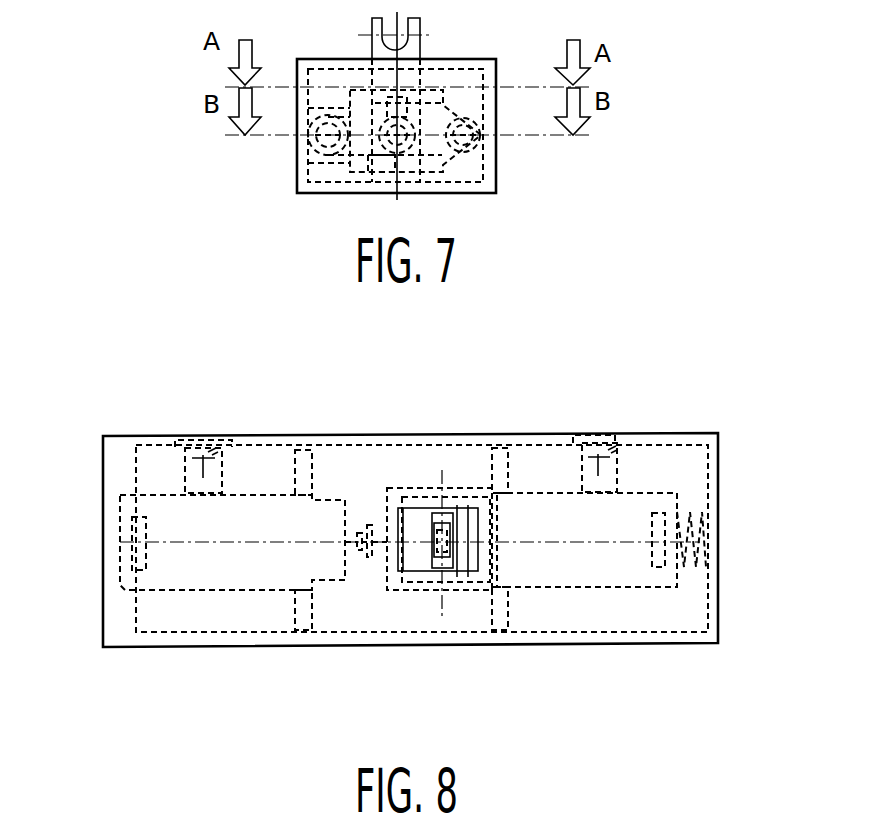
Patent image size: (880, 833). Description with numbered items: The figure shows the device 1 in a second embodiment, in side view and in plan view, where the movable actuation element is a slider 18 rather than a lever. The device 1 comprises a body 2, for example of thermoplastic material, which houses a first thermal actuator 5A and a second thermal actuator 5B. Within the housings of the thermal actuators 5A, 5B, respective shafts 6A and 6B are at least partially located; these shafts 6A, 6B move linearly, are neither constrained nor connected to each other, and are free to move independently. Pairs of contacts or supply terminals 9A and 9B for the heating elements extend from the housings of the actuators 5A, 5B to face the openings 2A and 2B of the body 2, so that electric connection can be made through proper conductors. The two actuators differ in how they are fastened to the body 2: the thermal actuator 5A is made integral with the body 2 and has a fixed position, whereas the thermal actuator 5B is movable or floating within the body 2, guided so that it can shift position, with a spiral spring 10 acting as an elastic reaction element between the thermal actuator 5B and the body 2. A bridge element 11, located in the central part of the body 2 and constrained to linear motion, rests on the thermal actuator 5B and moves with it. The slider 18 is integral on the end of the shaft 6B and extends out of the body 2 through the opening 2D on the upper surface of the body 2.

In FIG. 7, the device 1 is at (507, 44).
In FIG. 8, the device 1 is at (199, 661).
In FIG. 7, the body 2 is at (305, 63).
In FIG. 8, the body 2 is at (112, 615).
In FIG. 8, the first opening 2A is at (185, 440).
In FIG. 8, the second opening 2B is at (577, 440).
In FIG. 8, the opening 2D is at (412, 513).
In FIG. 8, the first thermal actuator 5A is at (160, 490).
In FIG. 8, the second thermal actuator 5B is at (662, 489).
In FIG. 8, the first shaft 6A is at (352, 527).
In FIG. 8, the second shaft 6B is at (430, 543).
In FIG. 7, the first pair of contacts 9A is at (308, 108).
In FIG. 8, the first pair of contacts 9A is at (218, 447).
In FIG. 8, the second pair of contacts 9B is at (613, 447).
In FIG. 8, the spiral spring 10 is at (690, 509).
In FIG. 8, the bridge element 11 is at (392, 493).
In FIG. 7, the slider 18 is at (417, 24).
In FIG. 8, the slider 18 is at (447, 575).